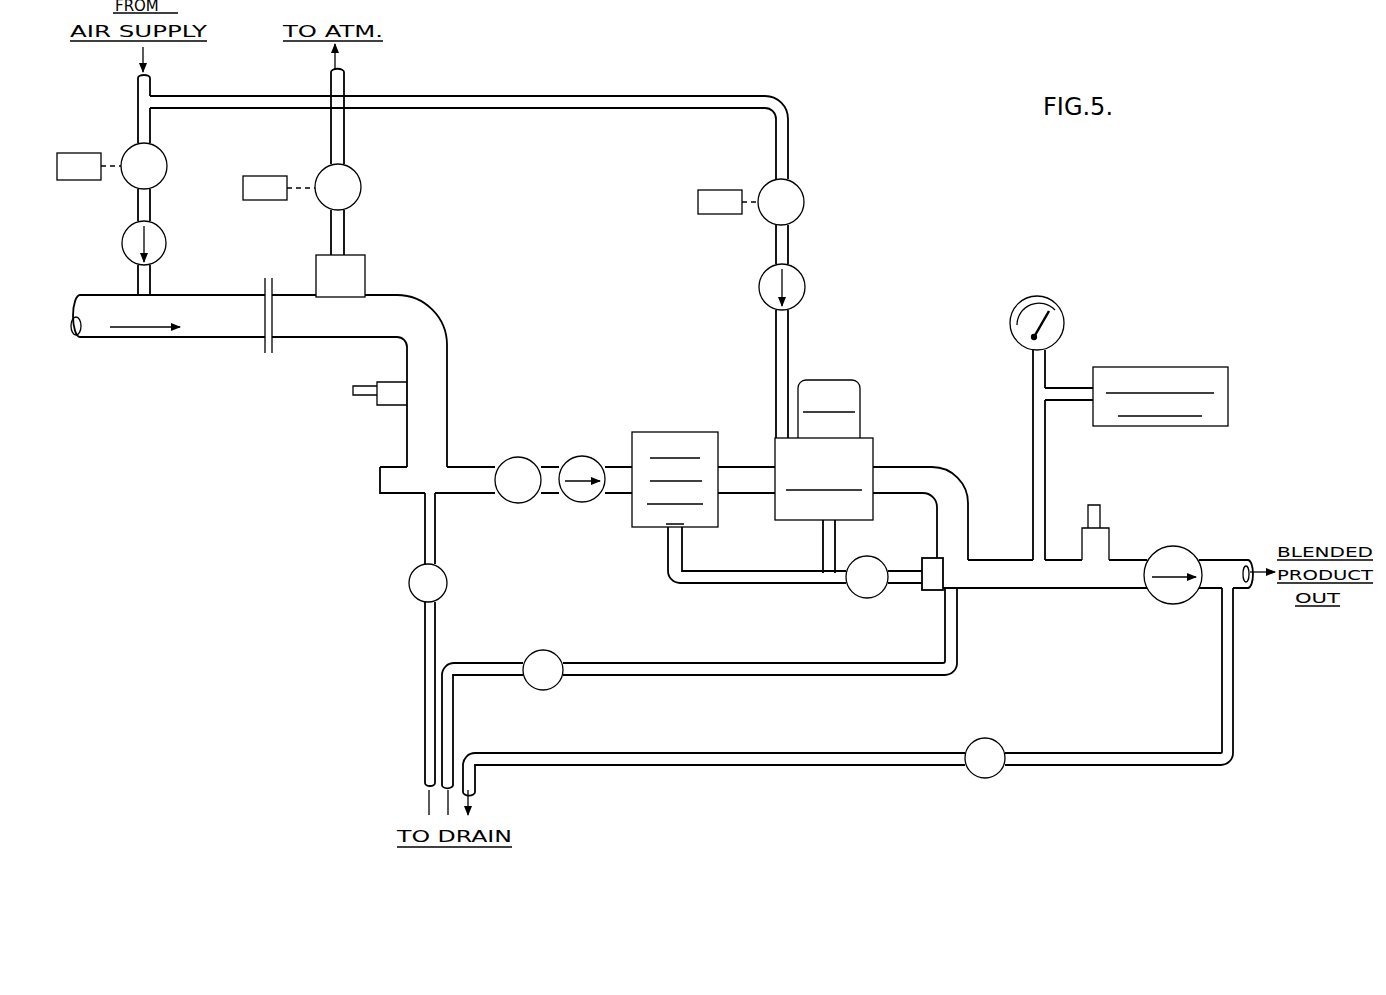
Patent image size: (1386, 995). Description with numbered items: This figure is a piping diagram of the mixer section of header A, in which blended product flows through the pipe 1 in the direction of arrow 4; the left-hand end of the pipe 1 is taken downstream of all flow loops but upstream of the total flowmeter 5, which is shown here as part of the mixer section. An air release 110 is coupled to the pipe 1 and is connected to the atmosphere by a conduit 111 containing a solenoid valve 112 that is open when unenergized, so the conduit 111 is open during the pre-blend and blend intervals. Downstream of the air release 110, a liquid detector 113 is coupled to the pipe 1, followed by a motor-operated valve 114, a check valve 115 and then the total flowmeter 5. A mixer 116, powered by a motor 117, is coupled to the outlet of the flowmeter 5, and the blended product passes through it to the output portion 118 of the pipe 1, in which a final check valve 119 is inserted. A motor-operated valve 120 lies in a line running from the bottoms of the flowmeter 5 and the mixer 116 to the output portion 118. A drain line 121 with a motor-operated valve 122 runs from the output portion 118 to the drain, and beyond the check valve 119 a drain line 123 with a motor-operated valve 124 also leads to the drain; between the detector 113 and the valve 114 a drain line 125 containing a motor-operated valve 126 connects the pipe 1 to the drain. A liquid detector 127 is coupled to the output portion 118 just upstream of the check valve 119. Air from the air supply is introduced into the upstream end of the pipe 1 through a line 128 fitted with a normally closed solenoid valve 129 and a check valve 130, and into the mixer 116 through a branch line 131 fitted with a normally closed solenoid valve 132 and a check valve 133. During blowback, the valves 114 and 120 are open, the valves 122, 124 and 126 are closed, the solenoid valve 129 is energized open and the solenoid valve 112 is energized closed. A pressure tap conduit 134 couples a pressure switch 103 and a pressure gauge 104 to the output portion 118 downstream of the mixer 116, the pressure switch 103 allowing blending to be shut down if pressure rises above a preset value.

The pipe 1 is at (438, 305).
The arrow 4 is at (142, 337).
The total flowmeter 5 is at (672, 432).
The pressure switch 103 is at (1157, 367).
The pressure gauge 104 is at (1042, 297).
The air release 110 is at (365, 262).
The conduit 111 is at (331, 220).
The solenoid valve 112 is at (361, 185).
The liquid detector 113 is at (388, 403).
The motor-operated valve 114 is at (518, 457).
The check valve 115 is at (575, 500).
The mixer 116 is at (863, 457).
The motor 117 is at (860, 383).
The output portion 118 is at (993, 562).
The check valve 119 is at (1181, 548).
The motor-operated valve 120 is at (862, 597).
The drain line 121 is at (700, 663).
The motor-operated valve 122 is at (549, 651).
The drain line 123 is at (1097, 753).
The motor-operated valve 124 is at (968, 745).
The drain line 125 is at (425, 526).
The motor-operated valve 126 is at (411, 592).
The liquid detector 127 is at (1107, 535).
The line 128 is at (138, 117).
The solenoid valve 129 is at (168, 163).
The check valve 130 is at (122, 243).
The branch line 131 is at (610, 96).
The solenoid valve 132 is at (804, 195).
The check valve 133 is at (805, 283).
The pressure tap conduit 134 is at (1033, 444).